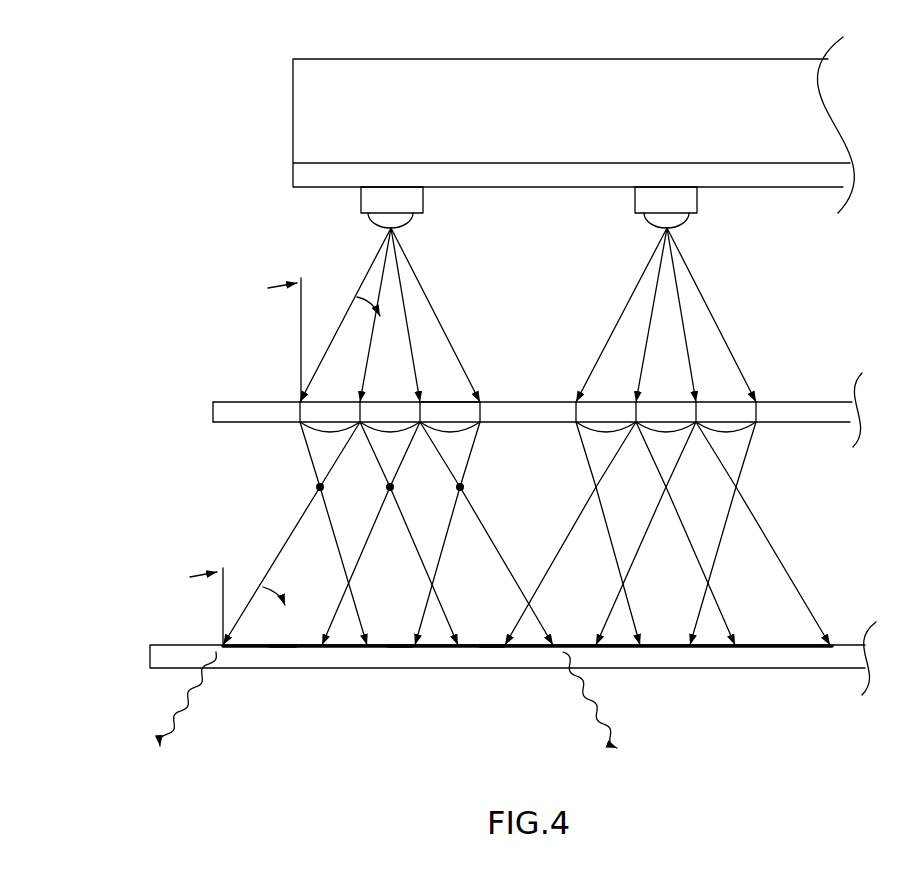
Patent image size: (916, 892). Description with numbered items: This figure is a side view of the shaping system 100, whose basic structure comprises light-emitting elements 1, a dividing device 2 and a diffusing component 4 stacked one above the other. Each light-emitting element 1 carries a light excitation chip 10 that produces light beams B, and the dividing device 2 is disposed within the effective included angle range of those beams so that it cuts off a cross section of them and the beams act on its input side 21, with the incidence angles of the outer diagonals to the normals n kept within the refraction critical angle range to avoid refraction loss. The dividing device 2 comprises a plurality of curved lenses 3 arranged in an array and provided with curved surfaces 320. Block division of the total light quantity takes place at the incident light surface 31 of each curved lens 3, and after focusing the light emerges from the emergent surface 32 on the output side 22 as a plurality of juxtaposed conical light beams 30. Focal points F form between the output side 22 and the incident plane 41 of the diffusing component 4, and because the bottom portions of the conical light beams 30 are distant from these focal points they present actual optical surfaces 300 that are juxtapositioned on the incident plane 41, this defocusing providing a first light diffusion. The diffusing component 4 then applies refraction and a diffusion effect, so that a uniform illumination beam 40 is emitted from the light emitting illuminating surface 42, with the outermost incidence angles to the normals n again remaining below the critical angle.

The shaping system 100 is at (182, 203).
The light-emitting element 1 is at (391, 202).
The light excitation chip 10 is at (359, 231).
The dividing device 2 is at (222, 413).
The input side of dividing device 21 is at (234, 390).
The output side of dividing device 22 is at (268, 442).
The curved lens 3 is at (448, 428).
The incident light surface of curved lens 31 is at (452, 385).
The emergent surface of curved lens 32 is at (462, 447).
The curved surface 320 is at (463, 439).
The conical light beam 30 is at (283, 548).
The actual optical surface 300 is at (283, 647).
The diffusing component 4 is at (167, 658).
The incident plane of diffusing component 41 is at (175, 643).
The light emitting illuminating surface 42 is at (167, 667).
The illumination beam 40 is at (192, 702).